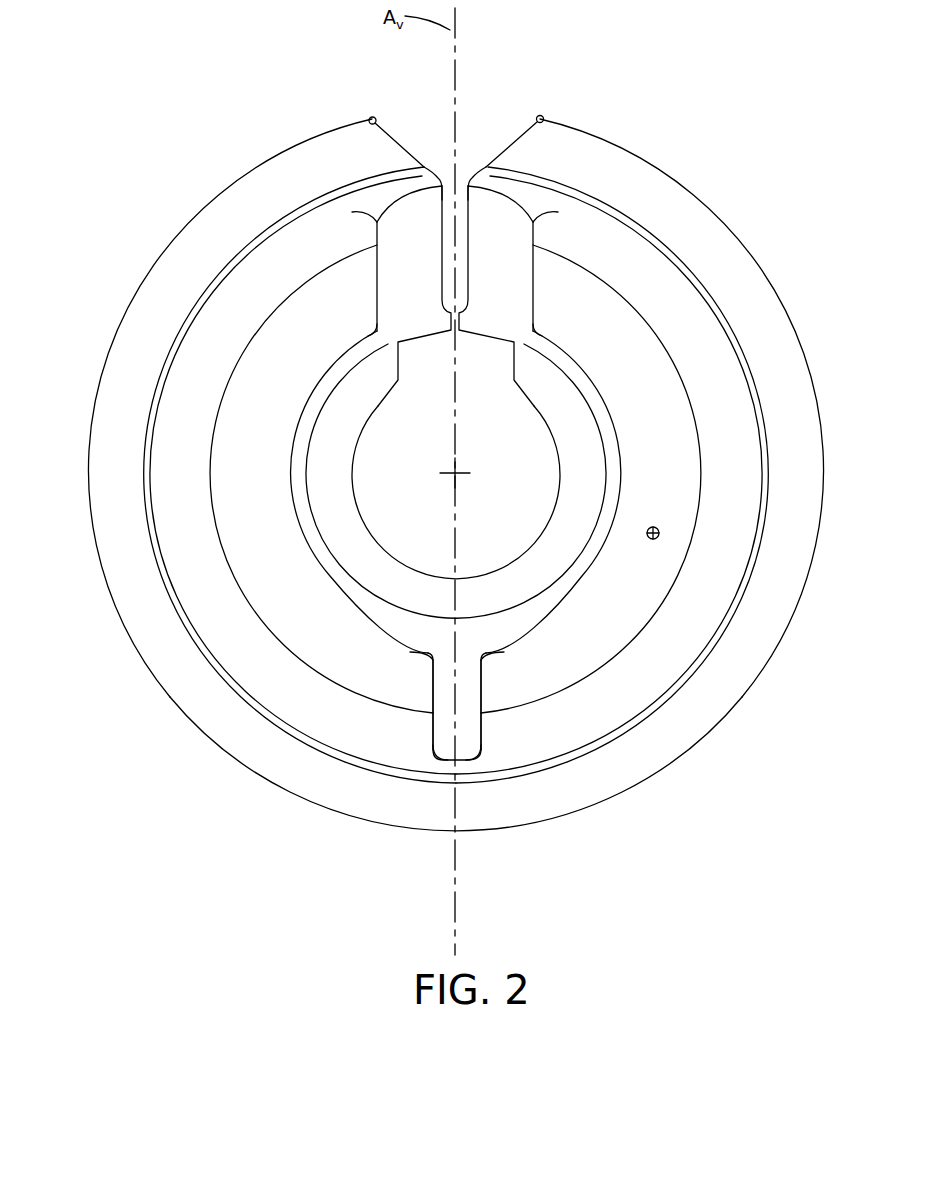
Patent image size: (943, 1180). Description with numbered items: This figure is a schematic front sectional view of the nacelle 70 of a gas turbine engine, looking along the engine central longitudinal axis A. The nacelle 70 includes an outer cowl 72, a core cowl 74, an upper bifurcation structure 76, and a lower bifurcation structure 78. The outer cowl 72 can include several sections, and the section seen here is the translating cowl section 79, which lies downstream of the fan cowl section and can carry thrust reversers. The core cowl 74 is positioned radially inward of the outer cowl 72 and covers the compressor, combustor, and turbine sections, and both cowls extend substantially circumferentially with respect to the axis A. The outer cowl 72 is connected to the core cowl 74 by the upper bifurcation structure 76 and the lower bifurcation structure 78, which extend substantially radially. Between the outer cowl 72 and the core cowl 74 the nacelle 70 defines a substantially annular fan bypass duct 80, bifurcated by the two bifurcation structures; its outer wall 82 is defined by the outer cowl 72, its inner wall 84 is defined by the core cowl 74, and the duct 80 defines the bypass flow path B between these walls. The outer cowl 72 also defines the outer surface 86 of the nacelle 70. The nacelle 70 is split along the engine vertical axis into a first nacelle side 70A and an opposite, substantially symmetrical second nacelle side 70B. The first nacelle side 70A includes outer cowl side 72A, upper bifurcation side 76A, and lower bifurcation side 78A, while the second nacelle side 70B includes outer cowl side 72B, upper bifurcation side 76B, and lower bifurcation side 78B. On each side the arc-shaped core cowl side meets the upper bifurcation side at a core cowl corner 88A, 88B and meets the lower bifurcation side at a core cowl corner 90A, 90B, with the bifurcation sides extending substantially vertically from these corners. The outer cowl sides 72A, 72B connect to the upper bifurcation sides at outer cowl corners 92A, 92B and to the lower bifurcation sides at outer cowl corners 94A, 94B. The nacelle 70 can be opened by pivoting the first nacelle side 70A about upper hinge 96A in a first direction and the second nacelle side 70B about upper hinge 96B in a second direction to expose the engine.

The nacelle 70 is at (150, 112).
The first nacelle side 70A is at (137, 283).
The second nacelle side 70B is at (747, 220).
The outer cowl 72 is at (300, 132).
The outer cowl side 72A is at (222, 190).
The outer cowl side 72B is at (617, 143).
The core cowl 74 is at (315, 371).
The upper bifurcation structure 76 is at (362, 285).
The upper bifurcation side 76A is at (421, 295).
The upper bifurcation side 76B is at (492, 295).
The lower bifurcation structure 78 is at (418, 687).
The lower bifurcation side 78A is at (445, 673).
The lower bifurcation side 78B is at (470, 690).
The translating cowl section 79 is at (205, 233).
The fan bypass duct 80 is at (240, 383).
The outer wall 82 is at (214, 528).
The inner wall 84 is at (294, 486).
The outer surface 86 is at (270, 790).
The core cowl corner 88A is at (376, 328).
The core cowl corner 88B is at (534, 328).
The core cowl corner 90A is at (408, 649).
The core cowl corner 90B is at (487, 653).
The outer cowl corner 92A is at (366, 226).
The outer cowl corner 92B is at (544, 226).
The outer cowl corner 94A is at (431, 752).
The outer cowl corner 94B is at (484, 752).
The upper hinge 96A is at (372, 117).
The upper hinge 96B is at (540, 115).
The engine central longitudinal axis A is at (458, 470).
The bypass flow path B is at (653, 527).